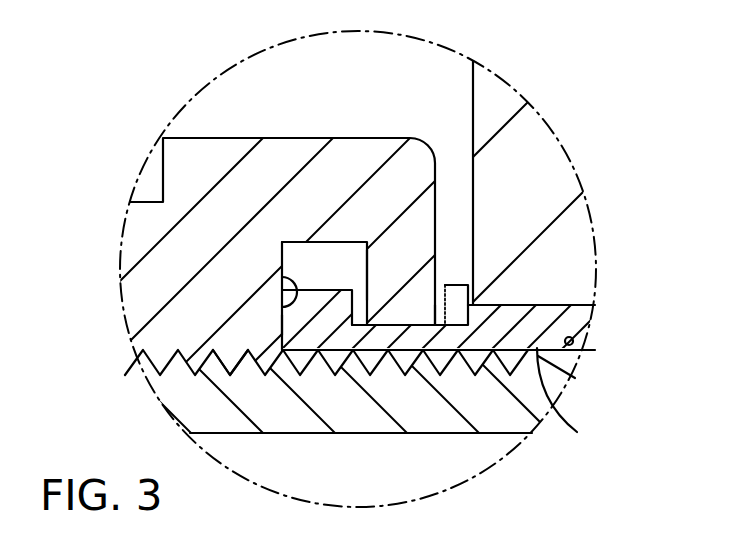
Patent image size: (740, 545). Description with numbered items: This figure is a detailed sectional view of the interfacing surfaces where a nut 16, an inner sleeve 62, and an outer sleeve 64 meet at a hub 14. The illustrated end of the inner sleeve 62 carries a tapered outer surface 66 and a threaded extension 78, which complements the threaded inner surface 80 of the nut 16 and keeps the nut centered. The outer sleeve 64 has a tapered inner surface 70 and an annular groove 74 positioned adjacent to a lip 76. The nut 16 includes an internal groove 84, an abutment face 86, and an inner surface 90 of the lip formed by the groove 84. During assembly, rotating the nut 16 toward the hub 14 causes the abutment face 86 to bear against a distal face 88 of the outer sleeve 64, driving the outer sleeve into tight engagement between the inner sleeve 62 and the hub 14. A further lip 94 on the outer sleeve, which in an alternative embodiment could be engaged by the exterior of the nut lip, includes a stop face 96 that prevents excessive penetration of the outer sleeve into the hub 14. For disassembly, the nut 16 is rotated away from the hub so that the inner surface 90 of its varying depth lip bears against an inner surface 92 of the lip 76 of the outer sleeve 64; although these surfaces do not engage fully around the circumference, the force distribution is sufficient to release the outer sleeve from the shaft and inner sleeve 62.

The hub 14 is at (565, 163).
The nut 16 is at (215, 157).
The inner sleeve 62 is at (538, 438).
The outer sleeve 64 is at (598, 318).
The tapered outer surface 66 is at (568, 344).
The tapered inner surface 70 is at (572, 397).
The annular groove 74 is at (440, 320).
The lip 76 is at (337, 310).
The threaded extension 78 is at (150, 362).
The threaded inner surface 80 is at (228, 375).
The internal groove 84 is at (327, 253).
The abutment face 86 is at (282, 277).
The distal face 88 is at (282, 323).
The inner surface of the lip 90 is at (367, 272).
The inner surface of lip 92 is at (356, 300).
The lip 94 is at (457, 285).
The stop face 96 is at (475, 287).